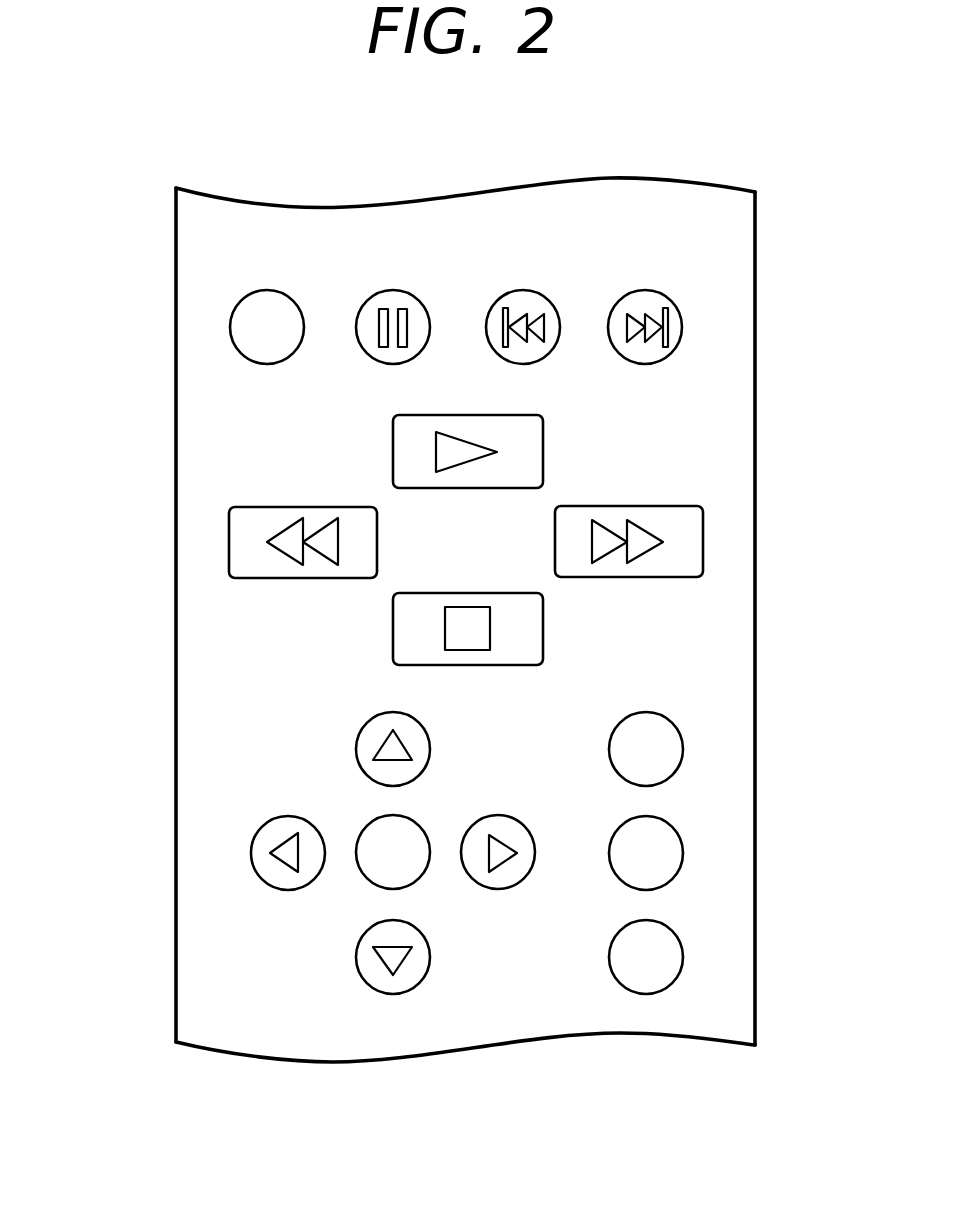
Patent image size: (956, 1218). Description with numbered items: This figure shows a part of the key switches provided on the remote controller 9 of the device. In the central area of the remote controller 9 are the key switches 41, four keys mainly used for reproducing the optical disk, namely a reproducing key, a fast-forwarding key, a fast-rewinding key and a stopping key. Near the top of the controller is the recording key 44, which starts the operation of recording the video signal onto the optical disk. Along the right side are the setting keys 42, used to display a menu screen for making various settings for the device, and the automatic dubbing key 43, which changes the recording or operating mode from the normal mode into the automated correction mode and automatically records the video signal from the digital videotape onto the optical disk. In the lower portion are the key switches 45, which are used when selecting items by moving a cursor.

The remote controller 9 is at (176, 888).
The key switches 41 is at (704, 464).
The setting keys 42 is at (681, 731).
The automatic dubbing key 43 is at (681, 937).
The recording key 44 is at (262, 291).
The key switches 45 is at (255, 772).